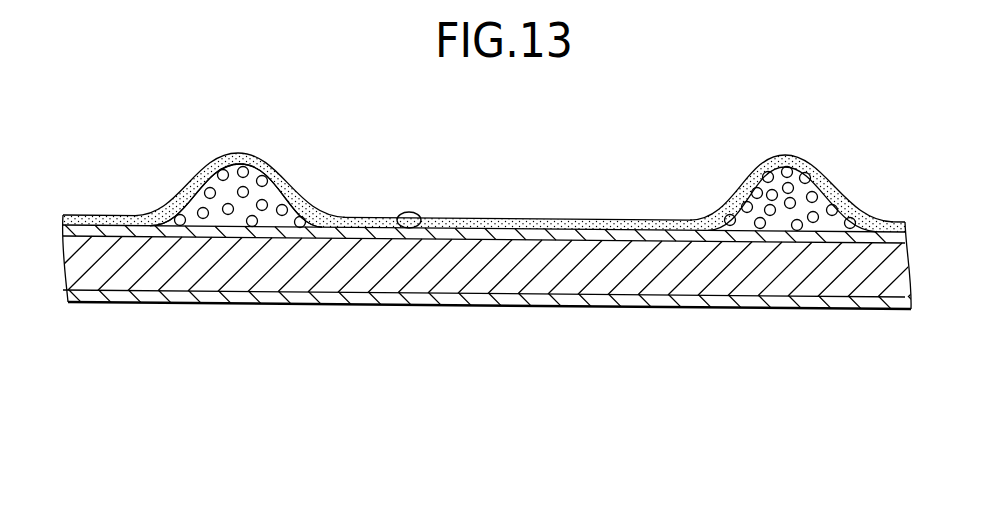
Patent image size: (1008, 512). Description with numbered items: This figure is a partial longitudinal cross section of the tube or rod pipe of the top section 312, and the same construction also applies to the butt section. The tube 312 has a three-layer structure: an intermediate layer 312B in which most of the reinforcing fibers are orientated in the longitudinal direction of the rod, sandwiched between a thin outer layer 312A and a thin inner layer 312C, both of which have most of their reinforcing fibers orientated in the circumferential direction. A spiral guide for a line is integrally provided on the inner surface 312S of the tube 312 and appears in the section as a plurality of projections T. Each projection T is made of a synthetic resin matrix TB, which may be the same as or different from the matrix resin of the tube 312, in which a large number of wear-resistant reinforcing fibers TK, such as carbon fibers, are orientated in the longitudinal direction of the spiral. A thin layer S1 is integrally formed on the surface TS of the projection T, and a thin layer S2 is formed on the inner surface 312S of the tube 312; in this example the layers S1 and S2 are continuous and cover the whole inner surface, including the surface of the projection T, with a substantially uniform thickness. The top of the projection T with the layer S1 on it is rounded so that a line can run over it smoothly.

The projection T is at (510, 150).
The layer S1 is at (238, 152).
The surface of the projection TS is at (262, 166).
The reinforcing fibers TK is at (287, 205).
The synthetic resin matrix TB is at (222, 193).
The layer S2 is at (493, 220).
The inner surface of the tube 312S is at (405, 228).
The inner layer 312C is at (489, 234).
The intermediate layer 312B is at (500, 267).
The outer layer 312A is at (494, 299).
The top section 312 is at (500, 329).